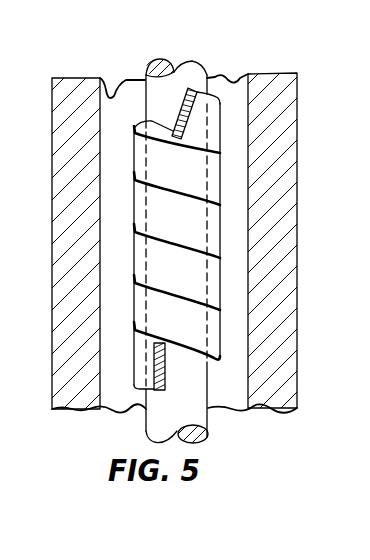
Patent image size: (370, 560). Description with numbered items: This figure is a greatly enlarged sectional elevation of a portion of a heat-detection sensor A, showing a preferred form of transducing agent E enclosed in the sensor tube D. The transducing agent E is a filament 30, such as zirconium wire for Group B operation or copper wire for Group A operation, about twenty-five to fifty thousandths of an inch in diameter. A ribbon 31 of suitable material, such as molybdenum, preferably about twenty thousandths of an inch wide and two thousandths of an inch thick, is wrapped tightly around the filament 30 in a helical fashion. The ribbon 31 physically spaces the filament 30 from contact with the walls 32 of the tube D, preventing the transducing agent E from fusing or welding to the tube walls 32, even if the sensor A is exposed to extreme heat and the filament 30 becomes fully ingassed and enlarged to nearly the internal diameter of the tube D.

The filament 30 is at (147, 428).
The ribbon 31 is at (134, 151).
The walls 32 is at (112, 84).
The sensor tube D is at (64, 76).
The transducing agent E is at (224, 108).
The sensor A is at (82, 437).